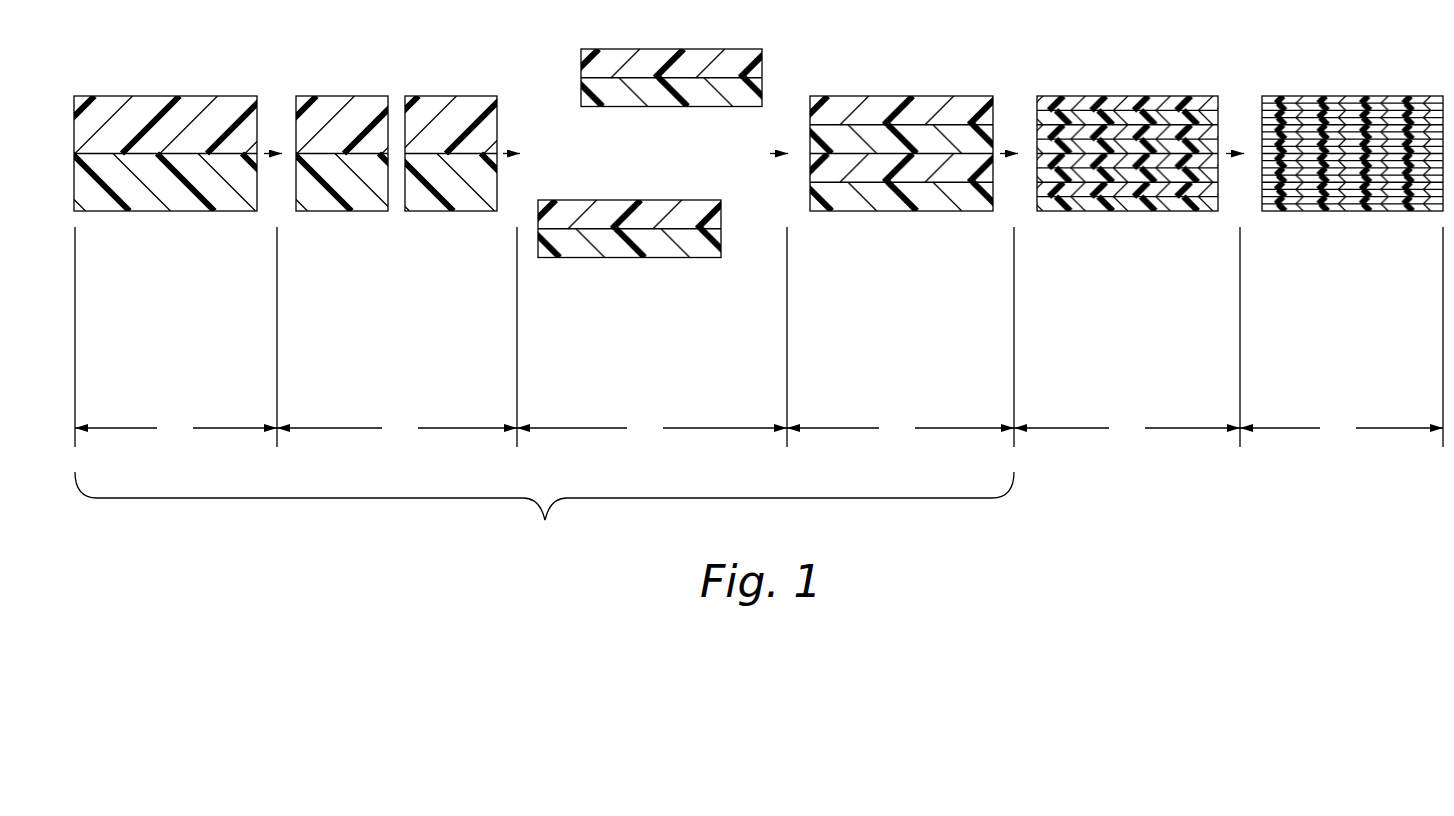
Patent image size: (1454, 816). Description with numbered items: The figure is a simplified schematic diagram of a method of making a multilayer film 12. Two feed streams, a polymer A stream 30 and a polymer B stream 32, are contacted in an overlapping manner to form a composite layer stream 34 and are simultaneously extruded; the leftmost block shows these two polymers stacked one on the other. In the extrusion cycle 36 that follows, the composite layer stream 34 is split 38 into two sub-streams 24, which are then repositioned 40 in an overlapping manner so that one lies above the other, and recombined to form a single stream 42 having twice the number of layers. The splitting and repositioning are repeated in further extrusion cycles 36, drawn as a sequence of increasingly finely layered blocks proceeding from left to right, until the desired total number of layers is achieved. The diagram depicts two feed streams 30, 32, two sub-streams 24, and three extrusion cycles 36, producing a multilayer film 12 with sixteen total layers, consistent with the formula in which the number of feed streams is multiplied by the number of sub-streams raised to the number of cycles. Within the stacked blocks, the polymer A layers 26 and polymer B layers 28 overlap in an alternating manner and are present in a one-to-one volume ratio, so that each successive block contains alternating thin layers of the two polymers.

The multilayer film 12 is at (1400, 86).
The sub-streams 24 is at (343, 118).
The polymer A layers 26 is at (913, 168).
The polymer B layers 28 is at (873, 138).
The polymer A stream 30 is at (149, 108).
The polymer B stream 32 is at (170, 195).
The composite layer stream 34 is at (176, 430).
The extrusion cycle 36 is at (759, 486).
The splitting 38 is at (397, 430).
The repositioning 40 is at (652, 430).
The single stream 42 is at (900, 430).